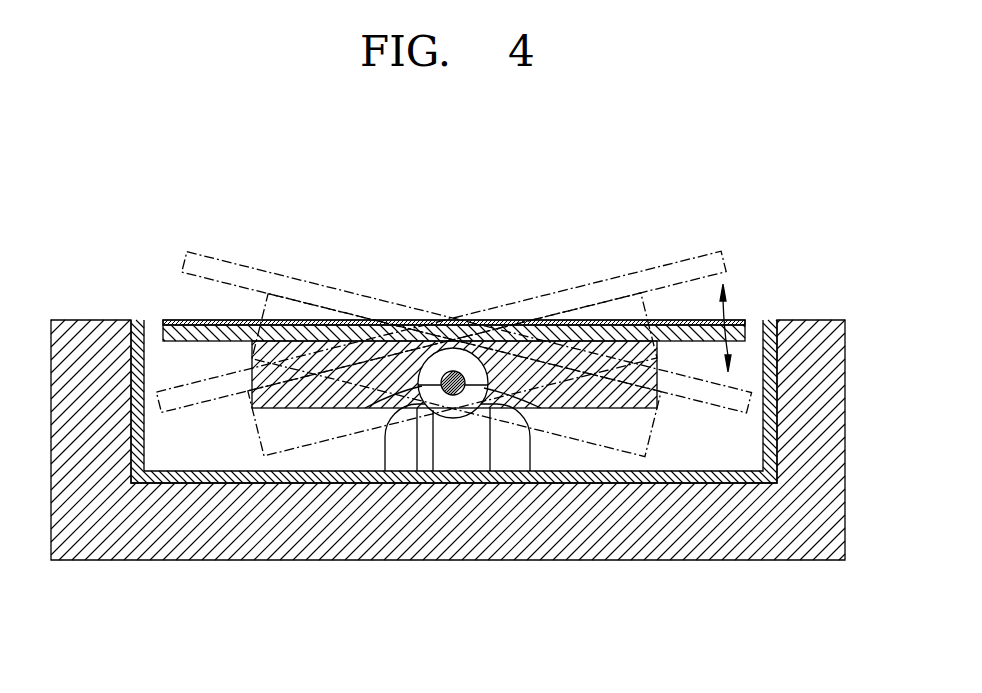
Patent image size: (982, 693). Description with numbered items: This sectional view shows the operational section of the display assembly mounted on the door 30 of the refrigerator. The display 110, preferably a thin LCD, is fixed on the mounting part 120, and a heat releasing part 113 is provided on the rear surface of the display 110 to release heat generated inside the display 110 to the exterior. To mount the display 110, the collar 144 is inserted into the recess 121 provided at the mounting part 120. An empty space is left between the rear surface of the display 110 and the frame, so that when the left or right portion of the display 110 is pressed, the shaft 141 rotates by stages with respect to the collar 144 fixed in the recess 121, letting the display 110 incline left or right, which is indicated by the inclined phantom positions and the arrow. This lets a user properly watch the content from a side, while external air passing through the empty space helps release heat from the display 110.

The door 30 is at (707, 545).
The display 110 is at (226, 322).
The heat releasing part 113 is at (297, 348).
The mounting part 120 is at (469, 457).
The recess 121 is at (433, 471).
The shaft 141 is at (383, 471).
The collar 144 is at (530, 471).